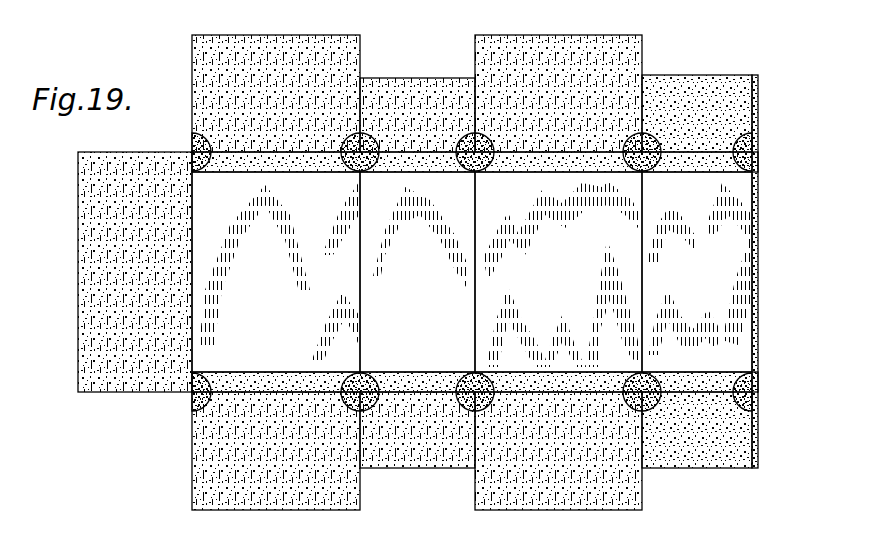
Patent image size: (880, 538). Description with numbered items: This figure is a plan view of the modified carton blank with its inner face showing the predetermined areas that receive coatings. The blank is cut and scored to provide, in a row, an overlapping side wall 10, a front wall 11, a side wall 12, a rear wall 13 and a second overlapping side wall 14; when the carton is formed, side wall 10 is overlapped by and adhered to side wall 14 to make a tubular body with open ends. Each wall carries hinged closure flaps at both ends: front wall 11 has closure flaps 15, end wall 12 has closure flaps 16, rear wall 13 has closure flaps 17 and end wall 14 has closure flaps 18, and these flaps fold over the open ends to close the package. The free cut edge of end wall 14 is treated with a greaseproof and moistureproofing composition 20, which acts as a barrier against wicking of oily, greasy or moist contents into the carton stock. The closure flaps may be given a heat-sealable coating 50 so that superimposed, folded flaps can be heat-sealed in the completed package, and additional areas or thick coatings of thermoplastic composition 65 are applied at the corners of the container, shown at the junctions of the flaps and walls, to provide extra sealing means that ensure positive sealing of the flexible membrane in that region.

The overlapping side wall 10 is at (146, 281).
The front wall 11 is at (283, 271).
The side wall 12 is at (431, 271).
The rear wall 13 is at (564, 271).
The overlapping side wall 14 is at (713, 281).
The closure flap 15 is at (250, 52).
The closure flap 16 is at (423, 82).
The closure flap 17 is at (530, 52).
The closure flap 18 is at (688, 78).
The greaseproof and moistureproofing composition 20 is at (758, 203).
The adhesive coating 50 is at (336, 64).
The thermoplastic composition 65 is at (205, 170).